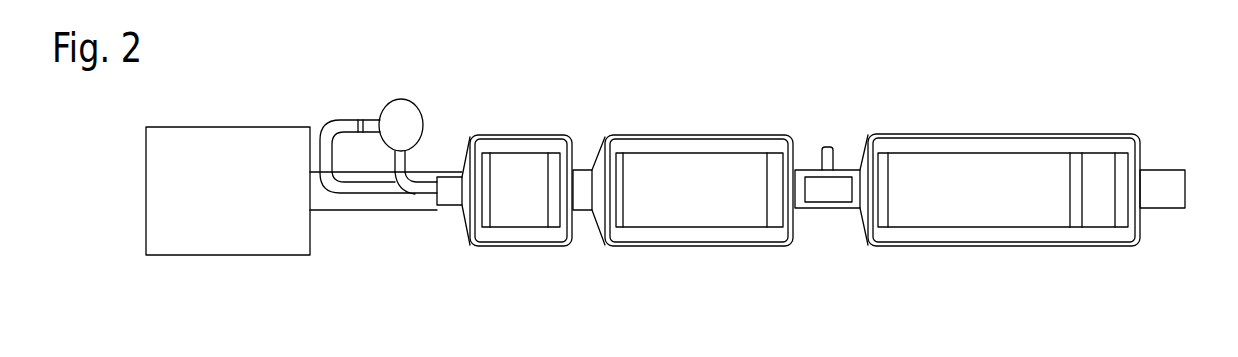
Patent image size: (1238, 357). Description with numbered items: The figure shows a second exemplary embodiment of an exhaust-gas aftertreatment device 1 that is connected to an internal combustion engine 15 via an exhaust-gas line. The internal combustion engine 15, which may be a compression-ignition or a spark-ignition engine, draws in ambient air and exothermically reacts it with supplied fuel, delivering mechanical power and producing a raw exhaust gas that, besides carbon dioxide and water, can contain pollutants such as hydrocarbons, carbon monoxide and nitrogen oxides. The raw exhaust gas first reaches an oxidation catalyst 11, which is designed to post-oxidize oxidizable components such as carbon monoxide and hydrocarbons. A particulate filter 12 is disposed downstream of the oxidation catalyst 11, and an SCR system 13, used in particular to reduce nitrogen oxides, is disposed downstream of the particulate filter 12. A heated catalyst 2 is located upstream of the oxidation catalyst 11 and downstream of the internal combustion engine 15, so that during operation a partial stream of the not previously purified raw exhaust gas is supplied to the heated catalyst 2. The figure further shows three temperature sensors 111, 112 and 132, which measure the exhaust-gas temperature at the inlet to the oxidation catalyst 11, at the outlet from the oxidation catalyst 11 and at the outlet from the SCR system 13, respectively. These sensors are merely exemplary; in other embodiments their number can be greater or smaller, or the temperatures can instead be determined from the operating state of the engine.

The exhaust-gas aftertreatment device 1 is at (1107, 72).
The heated catalyst 2 is at (400, 113).
The oxidation catalyst 11 is at (518, 162).
The particulate filter 12 is at (695, 163).
The SCR system 13 is at (982, 165).
The internal combustion engine 15 is at (226, 138).
The temperature sensor 111 is at (452, 193).
The temperature sensor 112 is at (583, 192).
The temperature sensor 132 is at (1165, 198).